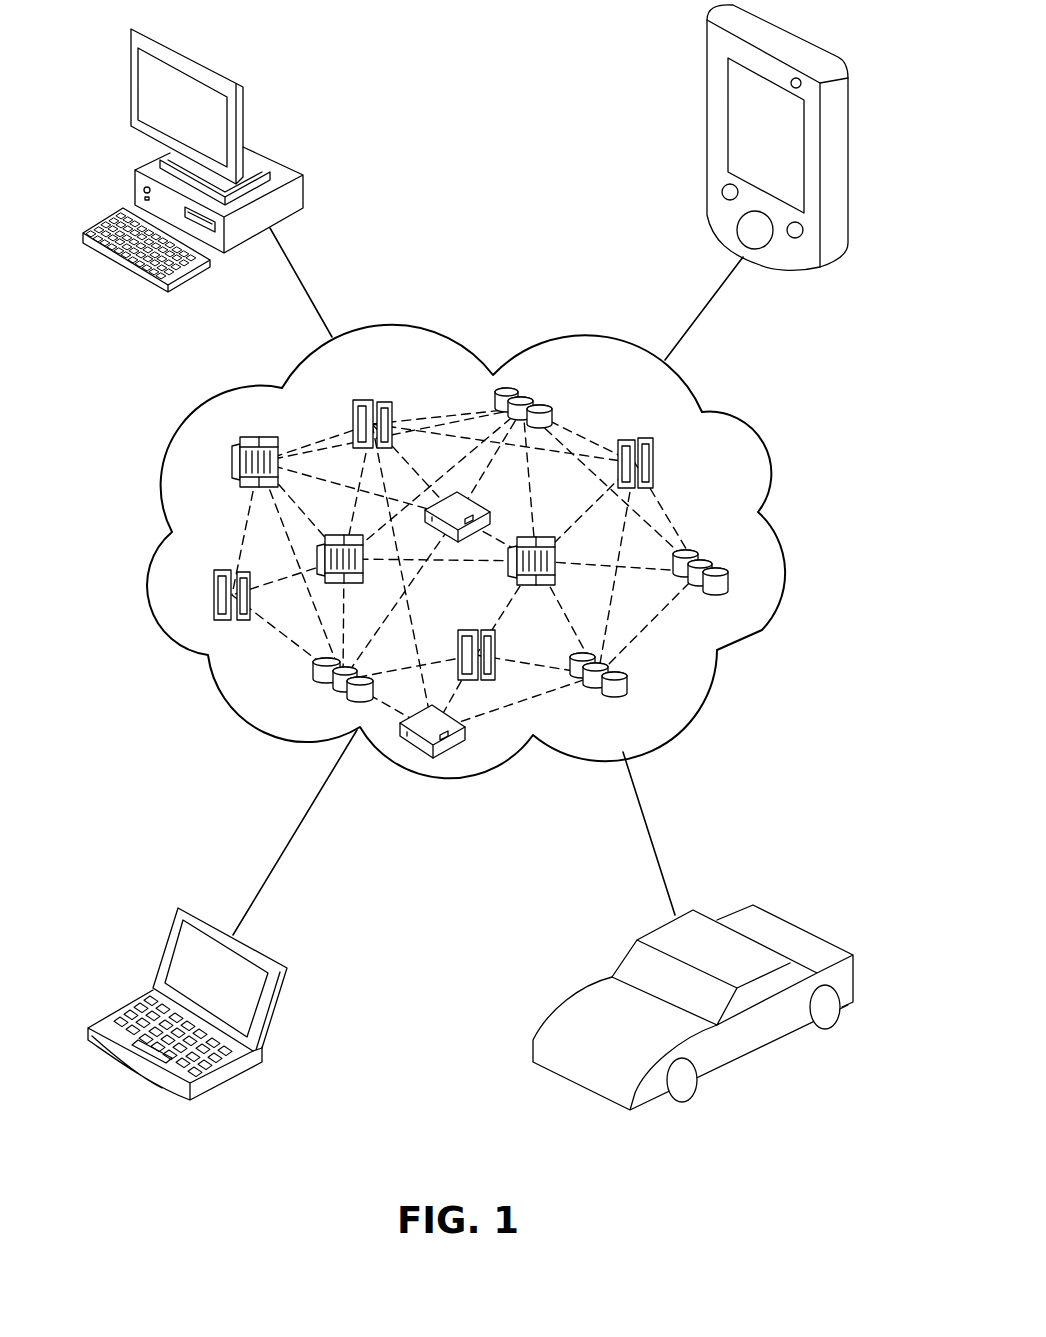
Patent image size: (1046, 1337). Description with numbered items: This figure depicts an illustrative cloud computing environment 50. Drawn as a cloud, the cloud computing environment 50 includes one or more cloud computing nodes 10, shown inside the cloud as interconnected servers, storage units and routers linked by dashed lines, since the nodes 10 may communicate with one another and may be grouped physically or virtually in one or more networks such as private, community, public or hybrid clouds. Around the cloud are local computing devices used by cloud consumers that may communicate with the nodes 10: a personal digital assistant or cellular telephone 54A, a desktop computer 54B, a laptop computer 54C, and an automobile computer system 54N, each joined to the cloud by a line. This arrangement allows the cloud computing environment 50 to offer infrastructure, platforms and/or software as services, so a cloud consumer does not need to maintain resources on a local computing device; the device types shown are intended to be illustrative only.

The cloud computing nodes 10 is at (703, 488).
The cloud computing environment 50 is at (762, 630).
The personal digital assistant or cellular telephone 54A is at (705, 83).
The desktop computer 54B is at (303, 188).
The laptop computer 54C is at (285, 977).
The automobile computer system 54N is at (855, 975).